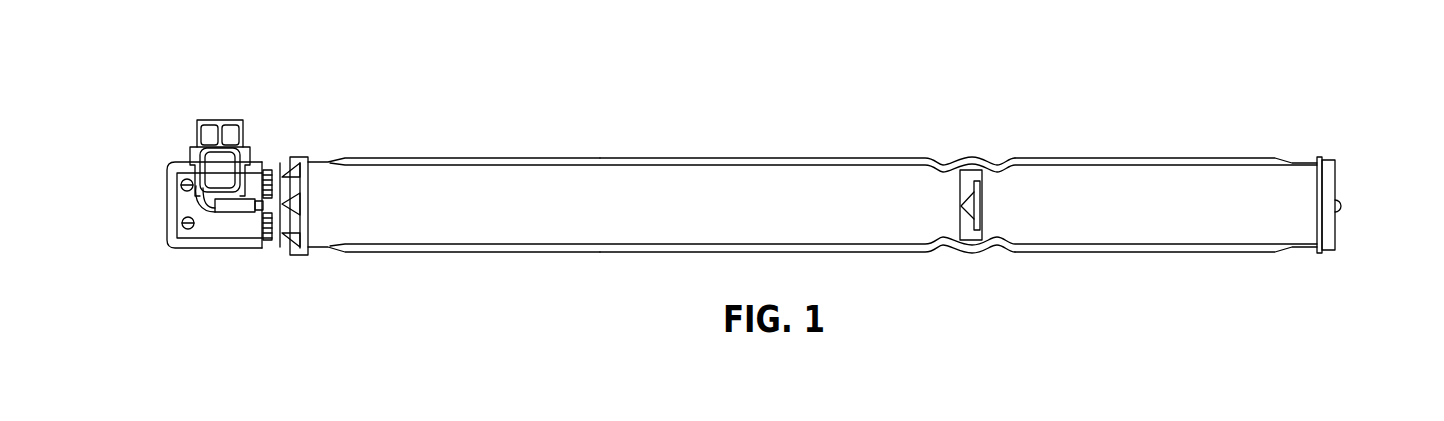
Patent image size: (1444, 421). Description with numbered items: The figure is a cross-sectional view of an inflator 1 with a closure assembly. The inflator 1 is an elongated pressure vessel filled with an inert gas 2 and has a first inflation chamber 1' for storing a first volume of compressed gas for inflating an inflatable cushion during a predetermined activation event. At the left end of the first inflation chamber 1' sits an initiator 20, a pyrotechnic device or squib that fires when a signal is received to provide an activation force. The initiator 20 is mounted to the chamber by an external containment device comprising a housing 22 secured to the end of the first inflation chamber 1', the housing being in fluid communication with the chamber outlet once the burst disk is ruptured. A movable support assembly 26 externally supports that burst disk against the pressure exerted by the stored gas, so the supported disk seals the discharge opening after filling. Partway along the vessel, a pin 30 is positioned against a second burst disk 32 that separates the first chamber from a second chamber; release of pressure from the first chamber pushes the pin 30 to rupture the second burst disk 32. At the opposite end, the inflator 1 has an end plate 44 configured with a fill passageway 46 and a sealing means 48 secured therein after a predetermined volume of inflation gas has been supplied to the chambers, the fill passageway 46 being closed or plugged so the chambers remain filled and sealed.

The inflator 1 is at (454, 161).
The first inflation chamber 1' is at (807, 161).
The inert gas 2 is at (708, 183).
The initiator 20 is at (188, 136).
The housing 22 is at (266, 164).
The movable support assembly 26 is at (208, 222).
The pin 30 is at (984, 205).
The second burst disk 32 is at (960, 192).
The end plate 44 is at (1327, 172).
The fill passageway 46 is at (1327, 212).
The sealing means 48 is at (1340, 206).